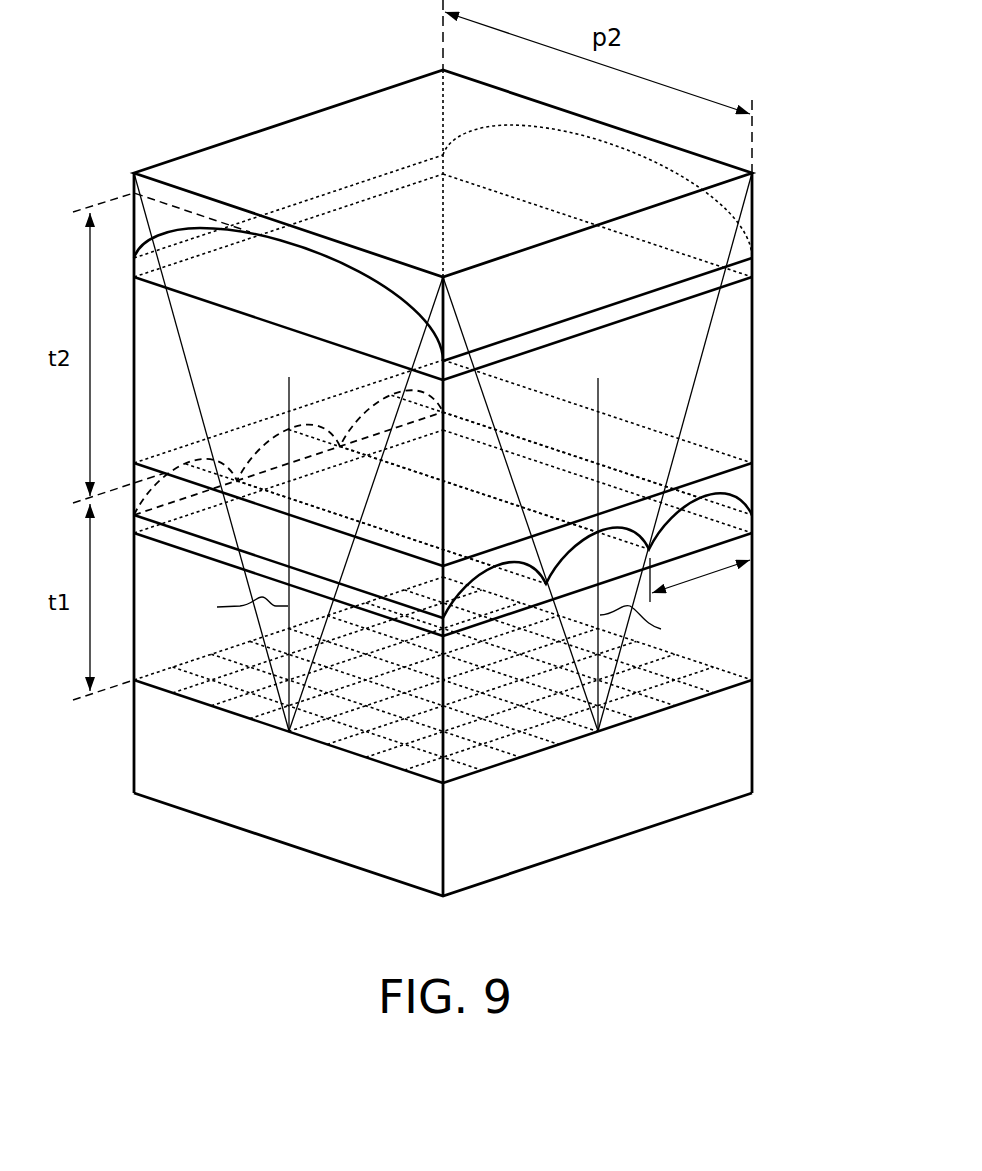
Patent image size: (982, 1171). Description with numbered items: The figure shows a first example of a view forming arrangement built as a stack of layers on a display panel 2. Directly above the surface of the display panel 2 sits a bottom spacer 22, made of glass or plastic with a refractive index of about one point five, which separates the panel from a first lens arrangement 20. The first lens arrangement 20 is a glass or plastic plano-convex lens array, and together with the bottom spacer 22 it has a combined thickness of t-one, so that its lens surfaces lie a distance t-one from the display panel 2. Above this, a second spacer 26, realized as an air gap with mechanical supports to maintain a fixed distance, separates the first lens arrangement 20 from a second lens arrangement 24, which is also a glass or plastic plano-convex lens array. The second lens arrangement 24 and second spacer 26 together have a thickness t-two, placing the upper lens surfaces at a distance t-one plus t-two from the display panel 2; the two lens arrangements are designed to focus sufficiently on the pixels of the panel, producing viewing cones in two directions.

The display panel 2 is at (767, 683).
The first lens arrangement 20 is at (767, 470).
The bottom spacer 22 is at (767, 537).
The second lens arrangement 24 is at (767, 173).
The second spacer 26 is at (767, 280).